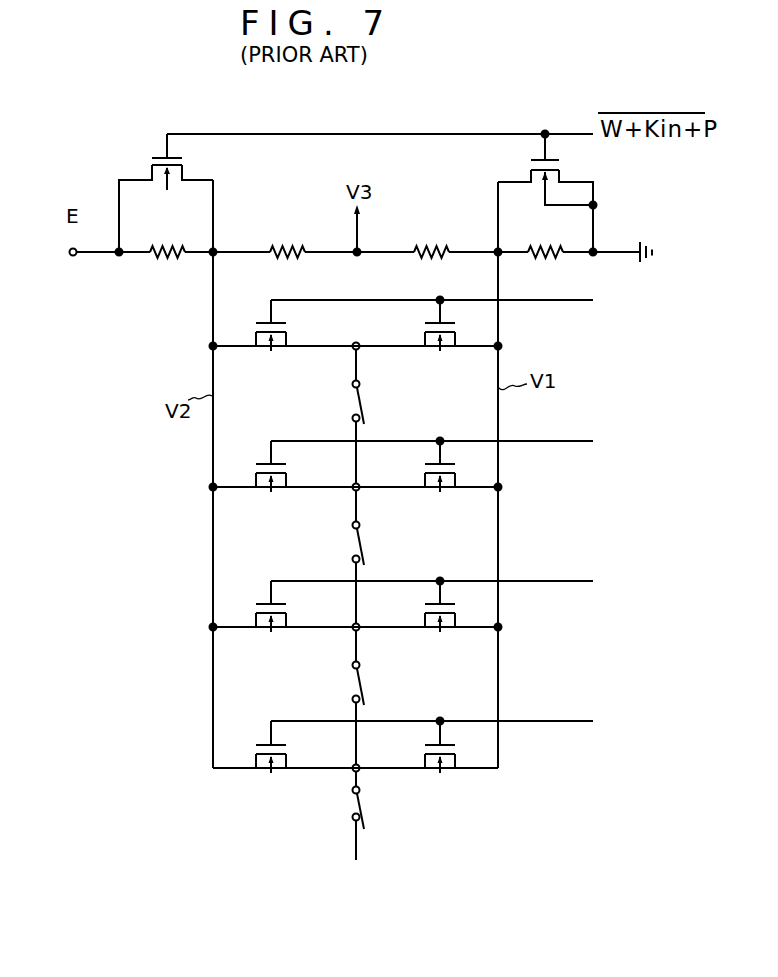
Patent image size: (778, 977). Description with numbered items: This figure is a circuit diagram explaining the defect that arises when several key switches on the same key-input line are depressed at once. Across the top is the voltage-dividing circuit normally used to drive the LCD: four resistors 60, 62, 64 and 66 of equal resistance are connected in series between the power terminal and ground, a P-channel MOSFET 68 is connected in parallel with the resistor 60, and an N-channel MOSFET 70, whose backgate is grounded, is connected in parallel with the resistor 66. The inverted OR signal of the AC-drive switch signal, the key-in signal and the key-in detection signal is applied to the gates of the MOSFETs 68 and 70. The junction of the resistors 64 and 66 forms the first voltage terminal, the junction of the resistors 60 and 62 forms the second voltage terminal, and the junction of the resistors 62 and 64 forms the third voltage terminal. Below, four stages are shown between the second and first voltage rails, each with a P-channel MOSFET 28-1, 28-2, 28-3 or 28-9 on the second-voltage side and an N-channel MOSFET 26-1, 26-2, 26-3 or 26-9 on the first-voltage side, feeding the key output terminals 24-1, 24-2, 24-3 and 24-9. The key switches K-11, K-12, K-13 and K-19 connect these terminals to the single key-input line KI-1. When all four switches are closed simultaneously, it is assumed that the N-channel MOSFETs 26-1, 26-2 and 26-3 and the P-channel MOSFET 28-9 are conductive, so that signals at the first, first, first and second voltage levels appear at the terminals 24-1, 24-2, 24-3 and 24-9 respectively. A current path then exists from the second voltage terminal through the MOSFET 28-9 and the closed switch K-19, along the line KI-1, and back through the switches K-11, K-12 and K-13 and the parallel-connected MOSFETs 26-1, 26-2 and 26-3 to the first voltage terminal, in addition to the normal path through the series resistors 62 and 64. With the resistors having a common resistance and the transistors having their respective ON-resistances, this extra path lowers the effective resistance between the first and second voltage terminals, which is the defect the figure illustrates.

The resistor 60 is at (171, 245).
The resistor 62 is at (286, 245).
The resistor 64 is at (433, 245).
The resistor 66 is at (535, 246).
The P-channel MOSFET 68 is at (189, 160).
The N-channel MOSFET 70 is at (558, 163).
The key output terminal 24-1 is at (358, 341).
The key output terminal 24-2 is at (360, 483).
The key output terminal 24-3 is at (360, 625).
The key output terminal 24-9 is at (385, 748).
The N-channel MOSFET 26-1 is at (428, 349).
The N-channel MOSFET 26-2 is at (448, 490).
The N-channel MOSFET 26-3 is at (447, 630).
The N-channel MOSFET 26-9 is at (451, 770).
The P-channel MOSFET 28-1 is at (262, 350).
The P-channel MOSFET 28-2 is at (265, 492).
The P-channel MOSFET 28-3 is at (264, 632).
The P-channel MOSFET 28-9 is at (264, 772).
The key switch K-11 is at (365, 407).
The key switch K-12 is at (362, 548).
The key switch K-13 is at (367, 688).
The key switch K-19 is at (360, 809).
The key-input line KI-1 is at (359, 844).